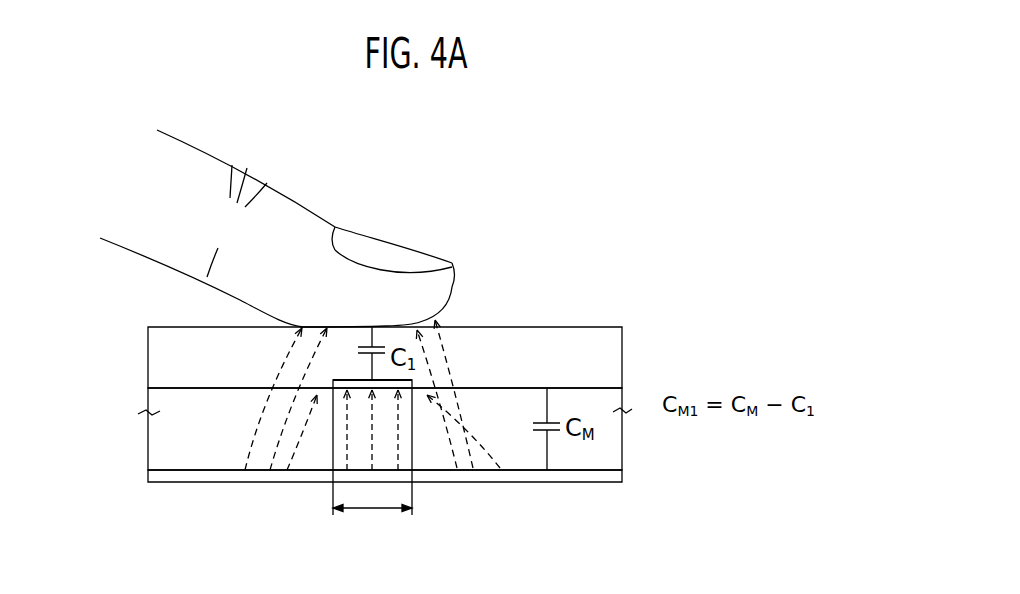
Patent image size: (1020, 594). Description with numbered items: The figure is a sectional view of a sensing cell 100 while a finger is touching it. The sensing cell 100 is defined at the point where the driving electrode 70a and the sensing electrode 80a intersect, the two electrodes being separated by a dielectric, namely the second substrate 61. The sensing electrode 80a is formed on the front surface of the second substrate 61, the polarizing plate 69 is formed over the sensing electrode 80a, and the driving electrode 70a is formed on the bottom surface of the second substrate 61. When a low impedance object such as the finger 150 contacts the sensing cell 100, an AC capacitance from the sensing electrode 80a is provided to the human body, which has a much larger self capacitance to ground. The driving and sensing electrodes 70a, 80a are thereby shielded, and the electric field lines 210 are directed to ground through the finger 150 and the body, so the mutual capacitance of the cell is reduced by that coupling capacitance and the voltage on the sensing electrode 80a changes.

The finger 150 is at (212, 158).
The polarizing plate 69 is at (156, 356).
The second substrate 61 is at (156, 447).
The driving electrode 70a is at (617, 475).
The sensing cell 100 is at (372, 463).
The sensing electrode 80a is at (413, 383).
The electric field lines 210 is at (492, 433).